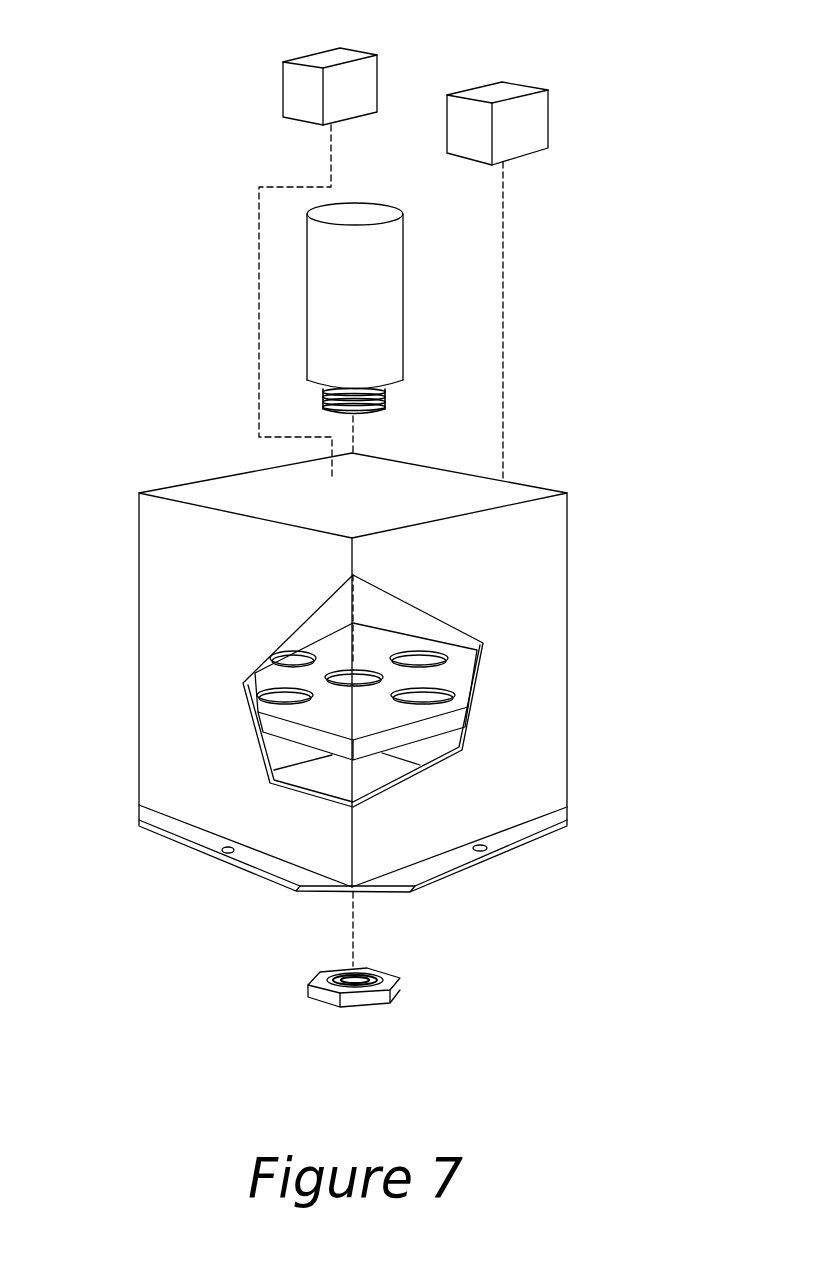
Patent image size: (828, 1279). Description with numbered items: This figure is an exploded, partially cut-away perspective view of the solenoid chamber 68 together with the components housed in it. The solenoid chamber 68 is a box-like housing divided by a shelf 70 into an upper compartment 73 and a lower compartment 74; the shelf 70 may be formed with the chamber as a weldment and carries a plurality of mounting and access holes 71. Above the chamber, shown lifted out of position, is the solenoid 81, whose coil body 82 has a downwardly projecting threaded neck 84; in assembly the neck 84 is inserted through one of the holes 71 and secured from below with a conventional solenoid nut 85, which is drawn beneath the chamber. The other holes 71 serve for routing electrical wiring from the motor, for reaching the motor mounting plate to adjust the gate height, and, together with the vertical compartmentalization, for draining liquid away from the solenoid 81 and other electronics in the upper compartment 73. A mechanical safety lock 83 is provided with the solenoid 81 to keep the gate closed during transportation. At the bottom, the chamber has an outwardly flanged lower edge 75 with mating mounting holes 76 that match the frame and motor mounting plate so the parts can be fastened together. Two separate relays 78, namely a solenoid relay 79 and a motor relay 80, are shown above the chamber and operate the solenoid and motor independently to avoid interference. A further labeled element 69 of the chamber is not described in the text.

The solenoid chamber 68 is at (365, 637).
The tank body 69 is at (255, 494).
The shelf 70 is at (336, 655).
The mounting and access holes 71 is at (358, 680).
The upper compartment 73 is at (250, 484).
The lower compartment 74 is at (336, 738).
The outwardly flanged lower edge 75 is at (415, 827).
The mating mounting holes 76 is at (523, 843).
The relays 78 is at (424, 92).
The solenoid relay 79 is at (302, 90).
The motor relay 80 is at (520, 138).
The solenoid 81 is at (338, 297).
The coil body 82 is at (346, 286).
The mechanical safety lock 83 is at (353, 216).
The threaded neck 84 is at (385, 405).
The solenoid nut 85 is at (400, 978).